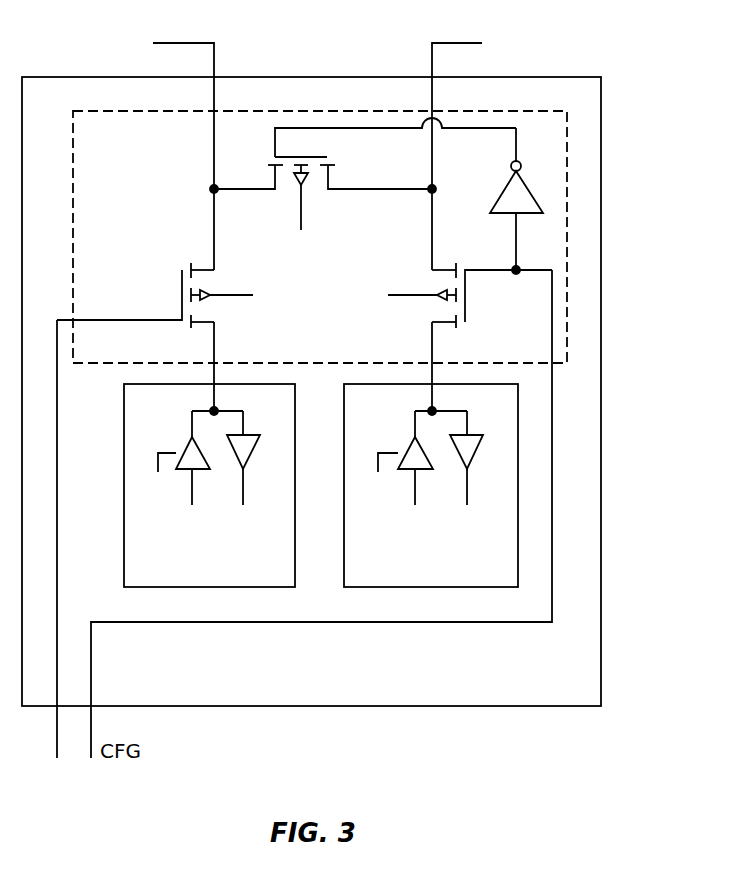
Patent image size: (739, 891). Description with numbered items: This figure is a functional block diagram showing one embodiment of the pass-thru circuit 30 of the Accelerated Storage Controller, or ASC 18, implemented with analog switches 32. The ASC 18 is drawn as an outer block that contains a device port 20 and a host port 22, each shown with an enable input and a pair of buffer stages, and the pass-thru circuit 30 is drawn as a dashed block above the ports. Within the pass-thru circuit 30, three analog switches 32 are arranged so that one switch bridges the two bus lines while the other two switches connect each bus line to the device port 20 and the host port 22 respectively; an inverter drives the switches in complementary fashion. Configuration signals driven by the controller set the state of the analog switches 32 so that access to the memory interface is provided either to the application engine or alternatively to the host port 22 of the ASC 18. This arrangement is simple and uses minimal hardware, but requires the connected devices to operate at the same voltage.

The Accelerated Storage Controller (ASC) 18 is at (543, 691).
The device port 20 is at (197, 581).
The host port 22 is at (446, 581).
The pass-thru circuit 30 is at (567, 160).
The analog switches 32 is at (337, 157).